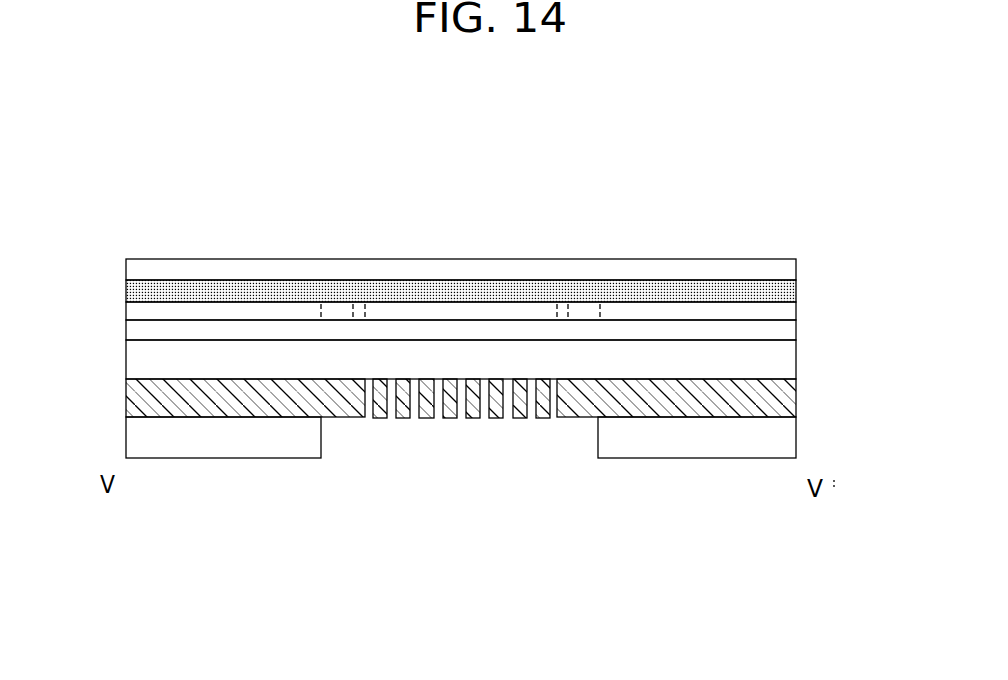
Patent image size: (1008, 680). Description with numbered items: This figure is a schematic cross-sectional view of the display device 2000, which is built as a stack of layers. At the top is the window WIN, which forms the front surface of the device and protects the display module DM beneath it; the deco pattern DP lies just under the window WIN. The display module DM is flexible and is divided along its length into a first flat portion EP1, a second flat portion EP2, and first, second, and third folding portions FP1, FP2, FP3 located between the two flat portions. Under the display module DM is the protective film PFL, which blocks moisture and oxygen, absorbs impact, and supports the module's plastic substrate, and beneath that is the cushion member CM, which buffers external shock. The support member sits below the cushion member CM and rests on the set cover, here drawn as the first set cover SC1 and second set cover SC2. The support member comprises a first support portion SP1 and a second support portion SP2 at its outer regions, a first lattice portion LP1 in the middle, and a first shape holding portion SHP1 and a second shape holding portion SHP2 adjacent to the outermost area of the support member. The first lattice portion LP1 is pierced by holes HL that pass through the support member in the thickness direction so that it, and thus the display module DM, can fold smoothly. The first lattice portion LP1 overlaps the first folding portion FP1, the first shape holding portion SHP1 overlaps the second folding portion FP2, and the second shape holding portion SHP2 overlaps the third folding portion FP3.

The display device 2000 is at (768, 208).
The display module DM is at (657, 180).
The window WIN is at (796, 272).
The deco pattern DP is at (796, 295).
The protective film PFL is at (796, 335).
The cushion member CM is at (796, 362).
The first flat portion EP1 is at (281, 312).
The second flat portion EP2 is at (637, 312).
The first folding portion FP1 is at (459, 312).
The second folding portion FP2 is at (339, 312).
The third folding portion FP3 is at (583, 312).
The first support portion SP1 is at (128, 393).
The second support portion SP2 is at (796, 400).
The first shape holding portion SHP1 is at (341, 418).
The second shape holding portion SHP2 is at (572, 420).
The holes HL is at (412, 420).
The first lattice portion LP1 is at (490, 420).
The first set cover SC1 is at (130, 437).
The second set cover SC2 is at (796, 440).